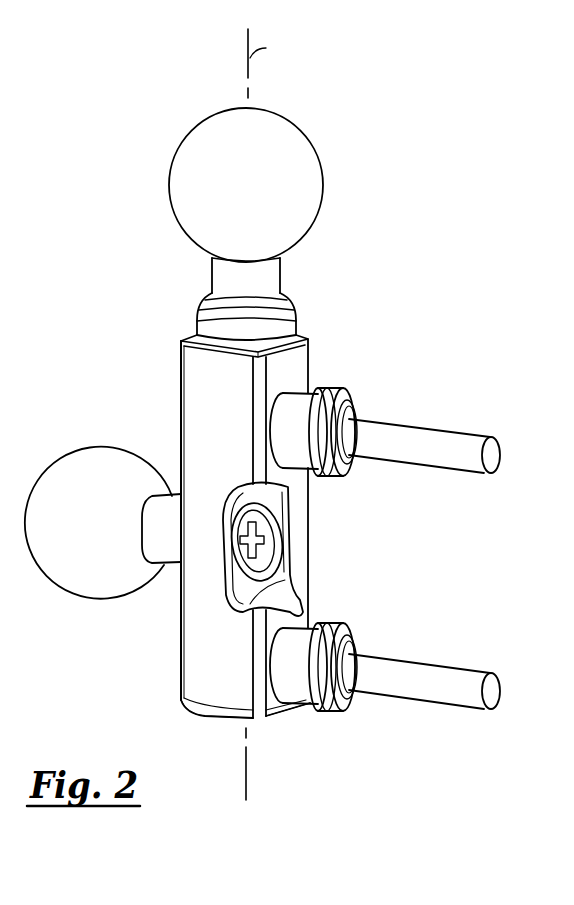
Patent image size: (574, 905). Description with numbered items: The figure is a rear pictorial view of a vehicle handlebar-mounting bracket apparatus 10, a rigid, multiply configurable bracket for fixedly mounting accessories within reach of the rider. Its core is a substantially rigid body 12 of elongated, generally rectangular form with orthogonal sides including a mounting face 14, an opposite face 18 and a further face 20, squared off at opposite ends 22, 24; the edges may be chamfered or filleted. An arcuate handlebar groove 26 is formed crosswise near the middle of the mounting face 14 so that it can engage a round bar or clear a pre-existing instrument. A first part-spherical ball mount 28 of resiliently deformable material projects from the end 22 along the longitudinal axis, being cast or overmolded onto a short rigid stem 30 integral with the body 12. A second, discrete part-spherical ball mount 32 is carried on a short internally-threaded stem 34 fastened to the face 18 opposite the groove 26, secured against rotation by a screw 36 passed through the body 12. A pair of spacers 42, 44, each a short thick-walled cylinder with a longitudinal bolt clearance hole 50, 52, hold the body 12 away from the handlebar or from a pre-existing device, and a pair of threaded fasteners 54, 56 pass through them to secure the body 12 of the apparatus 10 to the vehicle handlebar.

The vehicle handlebar-mounting bracket apparatus 10 is at (375, 210).
The rigid body 12 is at (268, 718).
The mounting face 14 is at (304, 368).
The face 18 is at (180, 370).
The face 20 is at (205, 425).
The end 22 is at (184, 338).
The end 24 is at (218, 718).
The handlebar groove 26 is at (284, 585).
The first part-spherical ball mount 28 is at (318, 150).
The stem 30 is at (213, 270).
The second part-spherical ball mount 32 is at (88, 447).
The internally-threaded stem 34 is at (168, 560).
The screw 36 is at (266, 528).
The spacer 42 is at (345, 395).
The spacer 44 is at (345, 628).
The bolt clearance hole 50 is at (355, 470).
The bolt clearance hole 52 is at (355, 708).
The threaded fastener 54 is at (424, 430).
The threaded fastener 56 is at (425, 665).